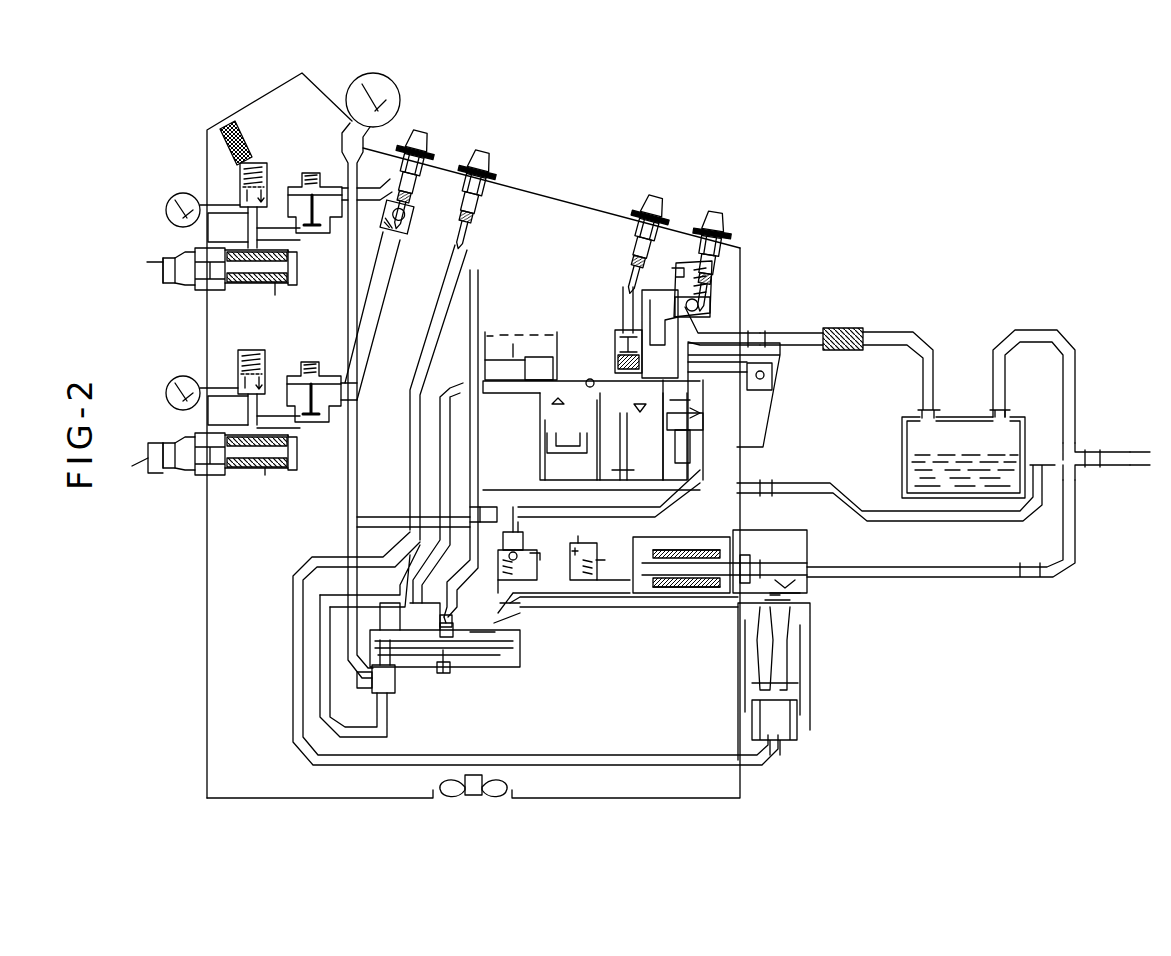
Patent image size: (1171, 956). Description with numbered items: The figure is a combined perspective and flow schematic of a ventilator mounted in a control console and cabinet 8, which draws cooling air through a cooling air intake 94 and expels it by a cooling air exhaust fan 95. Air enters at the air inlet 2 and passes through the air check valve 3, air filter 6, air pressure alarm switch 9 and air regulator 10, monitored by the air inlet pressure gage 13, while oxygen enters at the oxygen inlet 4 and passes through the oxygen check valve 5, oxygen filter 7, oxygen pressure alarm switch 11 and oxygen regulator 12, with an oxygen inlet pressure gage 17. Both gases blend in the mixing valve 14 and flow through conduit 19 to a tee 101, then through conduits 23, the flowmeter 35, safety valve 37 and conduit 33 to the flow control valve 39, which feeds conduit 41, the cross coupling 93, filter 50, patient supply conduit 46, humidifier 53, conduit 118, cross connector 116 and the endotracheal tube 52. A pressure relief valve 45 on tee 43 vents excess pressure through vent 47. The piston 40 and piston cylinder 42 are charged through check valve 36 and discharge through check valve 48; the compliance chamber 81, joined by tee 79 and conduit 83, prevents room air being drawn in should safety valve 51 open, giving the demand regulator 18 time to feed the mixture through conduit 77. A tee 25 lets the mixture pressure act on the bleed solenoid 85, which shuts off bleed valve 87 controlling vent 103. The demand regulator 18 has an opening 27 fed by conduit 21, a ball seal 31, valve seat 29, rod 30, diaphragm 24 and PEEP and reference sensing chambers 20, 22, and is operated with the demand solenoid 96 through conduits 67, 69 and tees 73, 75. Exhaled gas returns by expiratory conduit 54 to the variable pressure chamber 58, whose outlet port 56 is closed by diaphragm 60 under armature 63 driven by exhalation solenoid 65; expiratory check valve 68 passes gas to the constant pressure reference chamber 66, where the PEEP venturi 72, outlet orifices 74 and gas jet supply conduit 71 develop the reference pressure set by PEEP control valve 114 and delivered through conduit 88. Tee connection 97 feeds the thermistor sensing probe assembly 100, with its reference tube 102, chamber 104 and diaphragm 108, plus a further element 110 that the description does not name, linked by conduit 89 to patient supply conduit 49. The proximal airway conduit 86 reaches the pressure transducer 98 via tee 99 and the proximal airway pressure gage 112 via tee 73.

The air inlet 2 is at (134, 464).
The air check valve 3 is at (214, 448).
The oxygen inlet 4 is at (145, 262).
The oxygen check valve 5 is at (214, 258).
The air filter 6 is at (266, 476).
The oxygen filter 7 is at (276, 295).
The control console and cabinet 8 is at (548, 196).
The air pressure alarm switch 9 is at (252, 352).
The air regulator 10 is at (302, 362).
The oxygen pressure alarm switch 11 is at (254, 163).
The oxygen regulator 12 is at (308, 172).
The air inlet pressure gage 13 is at (166, 386).
The mixing valve 14 is at (423, 137).
The oxygen inlet pressure gage 17 is at (166, 200).
The demand regulator 18 is at (483, 667).
The conduit 19 is at (472, 266).
The PEEP sensing chamber 20 is at (502, 643).
The conduit 21 is at (468, 555).
The reference sensing chamber 22 is at (483, 657).
The conduit 23 is at (542, 494).
The diaphragm 24 is at (462, 650).
The tee 25 is at (484, 514).
The opening 27 is at (440, 627).
The valve seat 29 is at (453, 628).
The rod 30 is at (493, 633).
The ball seal 31 is at (448, 622).
The conduit 33 is at (622, 296).
The flowmeter 35 is at (780, 379).
The check valve 36 is at (552, 405).
The safety valve 37 is at (618, 331).
The flow control valve 39 is at (662, 204).
The piston 40 is at (580, 453).
The conduit 41 is at (657, 313).
The piston cylinder 42 is at (543, 460).
The tee 43 is at (703, 322).
The pressure relief valve 45 is at (727, 217).
The patient supply conduit 46 is at (925, 347).
The vent 47 is at (693, 267).
The check valve 48 is at (638, 413).
The patient supply conduit 49 is at (751, 338).
The filter 50 is at (838, 328).
The safety valve 51 is at (590, 379).
The endotracheal tube 52 is at (1128, 452).
The humidifier 53 is at (902, 456).
The expiratory conduit 54 is at (1073, 518).
The outlet port 56 is at (753, 562).
The variable pressure chamber 58 is at (785, 585).
The diaphragm 60 is at (745, 555).
The armature 63 is at (677, 548).
The exhalation solenoid 65 is at (690, 543).
The constant pressure reference chamber 66 is at (752, 612).
The conduit 67 is at (340, 722).
The expiratory check valve 68 is at (787, 600).
The conduit 69 is at (357, 686).
The gas jet supply conduit 71 is at (427, 330).
The PEEP venturi 72 is at (777, 680).
The tee 73 is at (358, 517).
The outlet orifices 74 is at (797, 717).
The tee 75 is at (405, 588).
The conduit 77 is at (458, 388).
The tee 79 is at (539, 368).
The compliance chamber 81 is at (537, 332).
The conduit 83 is at (517, 394).
The bleed solenoid 85 is at (537, 536).
The proximal airway conduit 86 is at (896, 493).
The bleed valve 87 is at (527, 580).
The conduit 88 is at (513, 598).
The conduit 89 is at (693, 377).
The cross coupling 93 is at (697, 327).
The cooling air intake 94 is at (222, 152).
The cooling air exhaust fan 95 is at (485, 798).
The demand solenoid 96 is at (412, 688).
The tee connection 97 is at (620, 595).
The pressure transducer 98 is at (594, 538).
The tee 99 is at (580, 514).
The thermistor sensing probe assembly 100 is at (700, 413).
The tee 101 is at (483, 490).
The reference tube 102 is at (673, 443).
The vent 103 is at (548, 555).
The chamber 104 is at (690, 430).
The diaphragm 108 is at (703, 423).
The passage 110 is at (688, 400).
The proximal airway pressure gage 112 is at (393, 82).
The PEEP control valve 114 is at (487, 158).
The cross connector 116 is at (1075, 452).
The conduit 118 is at (1062, 343).